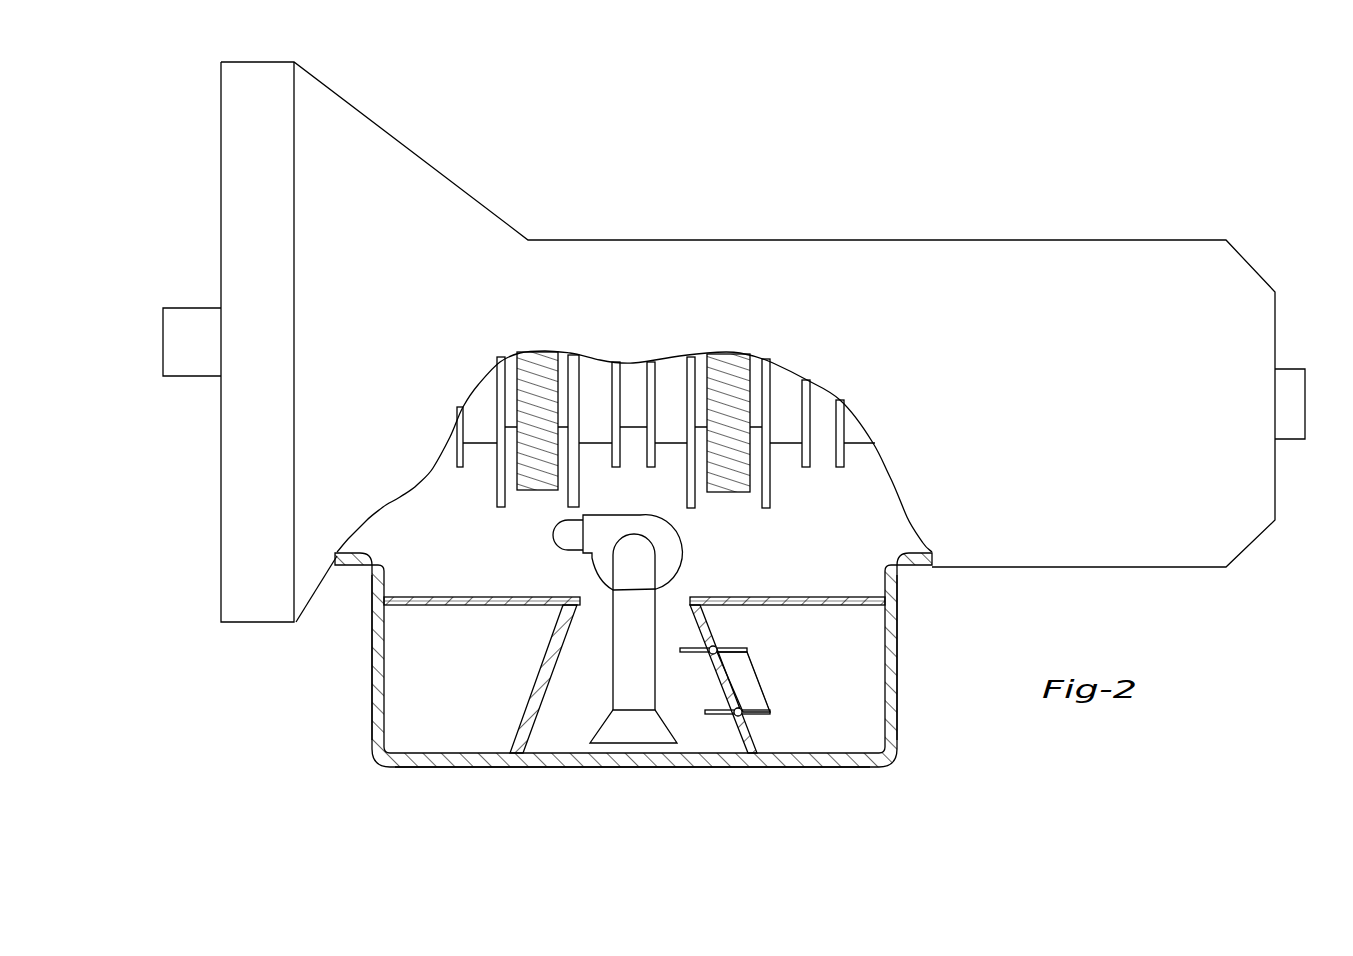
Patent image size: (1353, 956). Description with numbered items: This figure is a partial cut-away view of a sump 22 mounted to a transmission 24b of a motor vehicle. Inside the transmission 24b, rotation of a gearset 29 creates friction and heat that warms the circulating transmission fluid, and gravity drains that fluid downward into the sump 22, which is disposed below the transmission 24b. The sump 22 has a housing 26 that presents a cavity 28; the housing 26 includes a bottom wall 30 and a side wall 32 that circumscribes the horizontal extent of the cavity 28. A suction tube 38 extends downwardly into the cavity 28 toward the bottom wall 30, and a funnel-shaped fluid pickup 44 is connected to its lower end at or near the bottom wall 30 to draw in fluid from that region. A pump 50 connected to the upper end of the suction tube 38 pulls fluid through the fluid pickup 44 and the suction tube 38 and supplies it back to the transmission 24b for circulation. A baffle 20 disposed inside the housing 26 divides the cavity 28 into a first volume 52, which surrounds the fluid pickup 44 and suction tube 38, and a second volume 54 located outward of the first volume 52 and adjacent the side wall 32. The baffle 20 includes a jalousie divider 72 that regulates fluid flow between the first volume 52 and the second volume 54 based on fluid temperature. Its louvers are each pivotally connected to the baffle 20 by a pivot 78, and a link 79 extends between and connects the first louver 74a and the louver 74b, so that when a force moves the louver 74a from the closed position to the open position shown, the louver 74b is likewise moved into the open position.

The baffle 20 is at (463, 593).
The sump 22 is at (369, 764).
The transmission 24b is at (1060, 218).
The housing 26 is at (894, 764).
The cavity 28 is at (726, 581).
The gearset 29 is at (746, 496).
The bottom wall 30 is at (487, 761).
The side wall 32 is at (372, 631).
The suction tube 38 is at (630, 647).
The fluid pickup 44 is at (640, 733).
The pump 50 is at (640, 556).
The first volume 52 is at (580, 725).
The second volume 54 is at (440, 679).
The jalousie divider 72 is at (768, 697).
The first louver 74a is at (760, 718).
The louver 74b is at (742, 648).
The pivot 78 is at (738, 708).
The link 79 is at (757, 673).